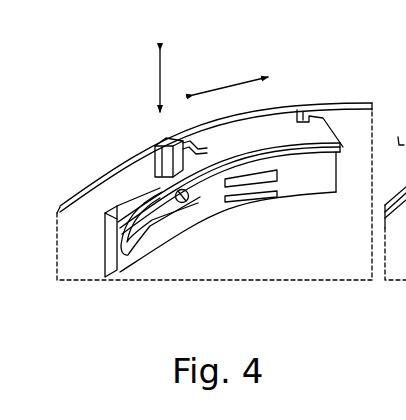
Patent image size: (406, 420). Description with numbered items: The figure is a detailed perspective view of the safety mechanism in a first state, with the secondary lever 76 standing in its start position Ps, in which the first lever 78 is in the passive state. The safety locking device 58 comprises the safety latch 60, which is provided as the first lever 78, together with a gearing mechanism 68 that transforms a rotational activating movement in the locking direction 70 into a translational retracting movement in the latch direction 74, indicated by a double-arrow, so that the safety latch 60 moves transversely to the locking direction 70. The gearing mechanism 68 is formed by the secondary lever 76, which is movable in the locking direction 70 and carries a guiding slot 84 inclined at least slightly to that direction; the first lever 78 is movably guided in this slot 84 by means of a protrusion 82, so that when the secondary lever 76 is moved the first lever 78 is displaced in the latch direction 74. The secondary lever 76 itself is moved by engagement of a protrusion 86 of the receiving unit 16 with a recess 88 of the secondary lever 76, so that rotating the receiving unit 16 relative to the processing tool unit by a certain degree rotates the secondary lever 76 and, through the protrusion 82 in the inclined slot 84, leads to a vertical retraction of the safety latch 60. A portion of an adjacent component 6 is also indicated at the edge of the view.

The receiving unit 16 is at (357, 103).
The protrusion 86 is at (270, 107).
The secondary lever 76 is at (313, 119).
The recess 88 is at (277, 128).
The first lever 78 is at (154, 157).
The guiding slot 84 is at (137, 250).
The protrusion 82 is at (187, 203).
The safety latch 60 is at (159, 138).
The gearing mechanism 68 is at (142, 133).
The safety locking device 58 is at (97, 78).
The latch direction 74 is at (170, 100).
The locking direction 70 is at (231, 80).
The start position Ps is at (80, 180).
The adjacent component 6 is at (398, 140).